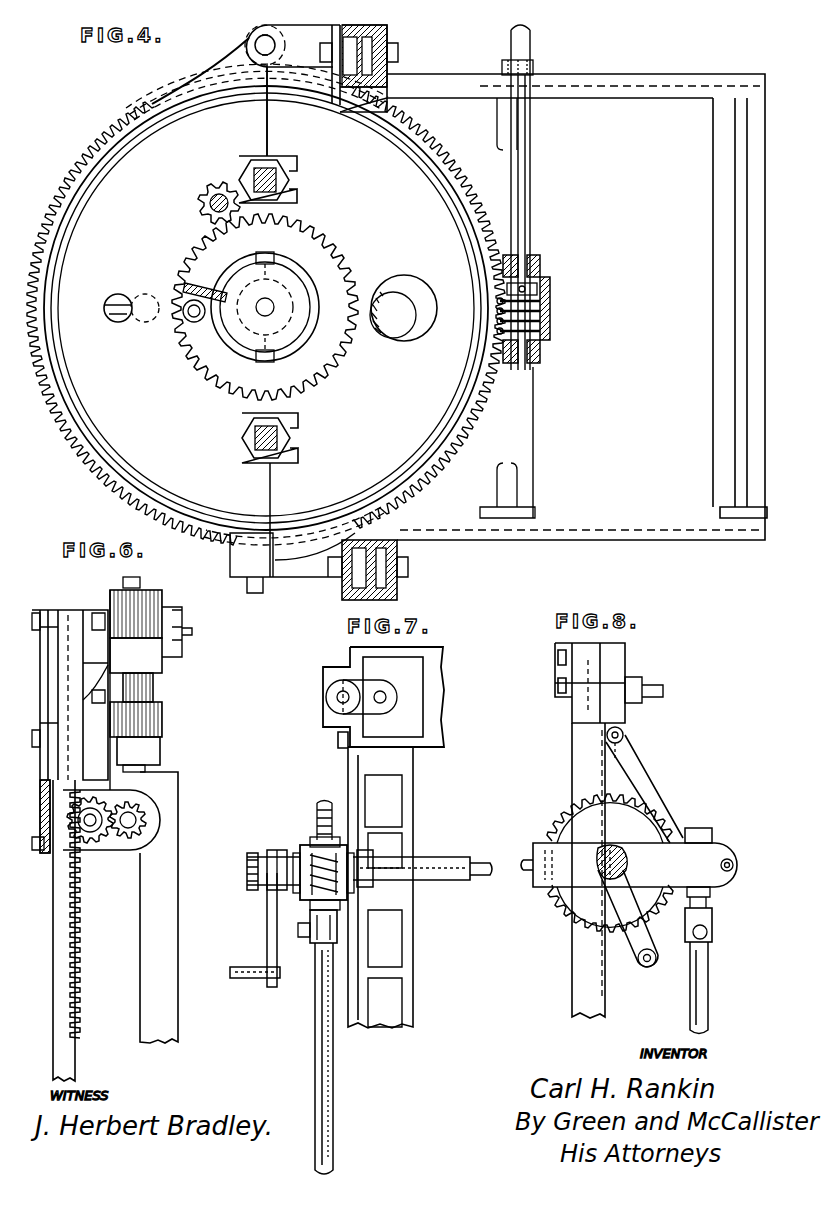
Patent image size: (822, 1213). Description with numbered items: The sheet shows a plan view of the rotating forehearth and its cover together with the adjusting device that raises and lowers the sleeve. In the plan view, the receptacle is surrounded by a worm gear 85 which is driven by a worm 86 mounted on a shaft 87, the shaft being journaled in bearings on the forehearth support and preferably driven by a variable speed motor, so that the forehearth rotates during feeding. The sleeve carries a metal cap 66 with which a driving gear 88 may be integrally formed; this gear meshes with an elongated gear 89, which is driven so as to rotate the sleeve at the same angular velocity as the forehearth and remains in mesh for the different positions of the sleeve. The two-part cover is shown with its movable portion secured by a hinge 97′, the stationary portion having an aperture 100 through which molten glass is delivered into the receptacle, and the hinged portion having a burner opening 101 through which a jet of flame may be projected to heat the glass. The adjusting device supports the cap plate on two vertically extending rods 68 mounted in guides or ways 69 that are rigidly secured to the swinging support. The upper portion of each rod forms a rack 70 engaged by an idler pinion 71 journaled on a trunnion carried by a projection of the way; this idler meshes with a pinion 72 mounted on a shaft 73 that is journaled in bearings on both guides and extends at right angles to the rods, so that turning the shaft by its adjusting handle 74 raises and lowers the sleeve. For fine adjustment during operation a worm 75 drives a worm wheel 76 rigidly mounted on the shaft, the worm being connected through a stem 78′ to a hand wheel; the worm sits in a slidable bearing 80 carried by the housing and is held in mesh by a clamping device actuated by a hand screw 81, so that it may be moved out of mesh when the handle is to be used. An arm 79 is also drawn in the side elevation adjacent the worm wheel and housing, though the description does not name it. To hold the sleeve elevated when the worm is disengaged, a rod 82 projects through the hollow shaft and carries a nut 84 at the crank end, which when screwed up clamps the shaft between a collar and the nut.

In FIG. 4, the metal cap 66 is at (332, 268).
In FIG. 6, the vertically extending rods 68 is at (75, 1055).
In FIG. 6, the guides or ways 69 is at (73, 762).
In FIG. 6, the rack 70 is at (78, 933).
In FIG. 6, the pinion 71 is at (90, 845).
In FIG. 6, the pinion 72 is at (140, 793).
In FIG. 6, the shaft 73 is at (133, 820).
In FIG. 7, the shaft 73 is at (446, 860).
In FIG. 7, the adjusting handle 74 is at (267, 932).
In FIG. 8, the adjusting handle 74 is at (633, 942).
In FIG. 7, the worm 75 is at (313, 853).
In FIG. 7, the worm wheel 76 is at (316, 805).
In FIG. 8, the worm wheel 76 is at (553, 822).
In FIG. 7, the stem 78′ is at (315, 1038).
In FIG. 8, the stem 78′ is at (710, 976).
In FIG. 8, the arm 79 is at (700, 853).
In FIG. 8, the slidable bearing 80 is at (697, 833).
In FIG. 7, the hand screw 81 is at (373, 890).
In FIG. 7, the rod 82 is at (495, 855).
In FIG. 7, the nut 84 is at (247, 866).
In FIG. 8, the nut 84 is at (605, 870).
In FIG. 4, the worm gear 85 is at (473, 197).
In FIG. 4, the worm 86 is at (550, 296).
In FIG. 4, the shaft 87 is at (523, 190).
In FIG. 4, the driving gear 88 is at (187, 258).
In FIG. 4, the driving gear 89 is at (216, 195).
In FIG. 4, the hinge 97′ is at (250, 44).
In FIG. 4, the aperture 100 is at (393, 325).
In FIG. 4, the burner opening 101 is at (121, 297).